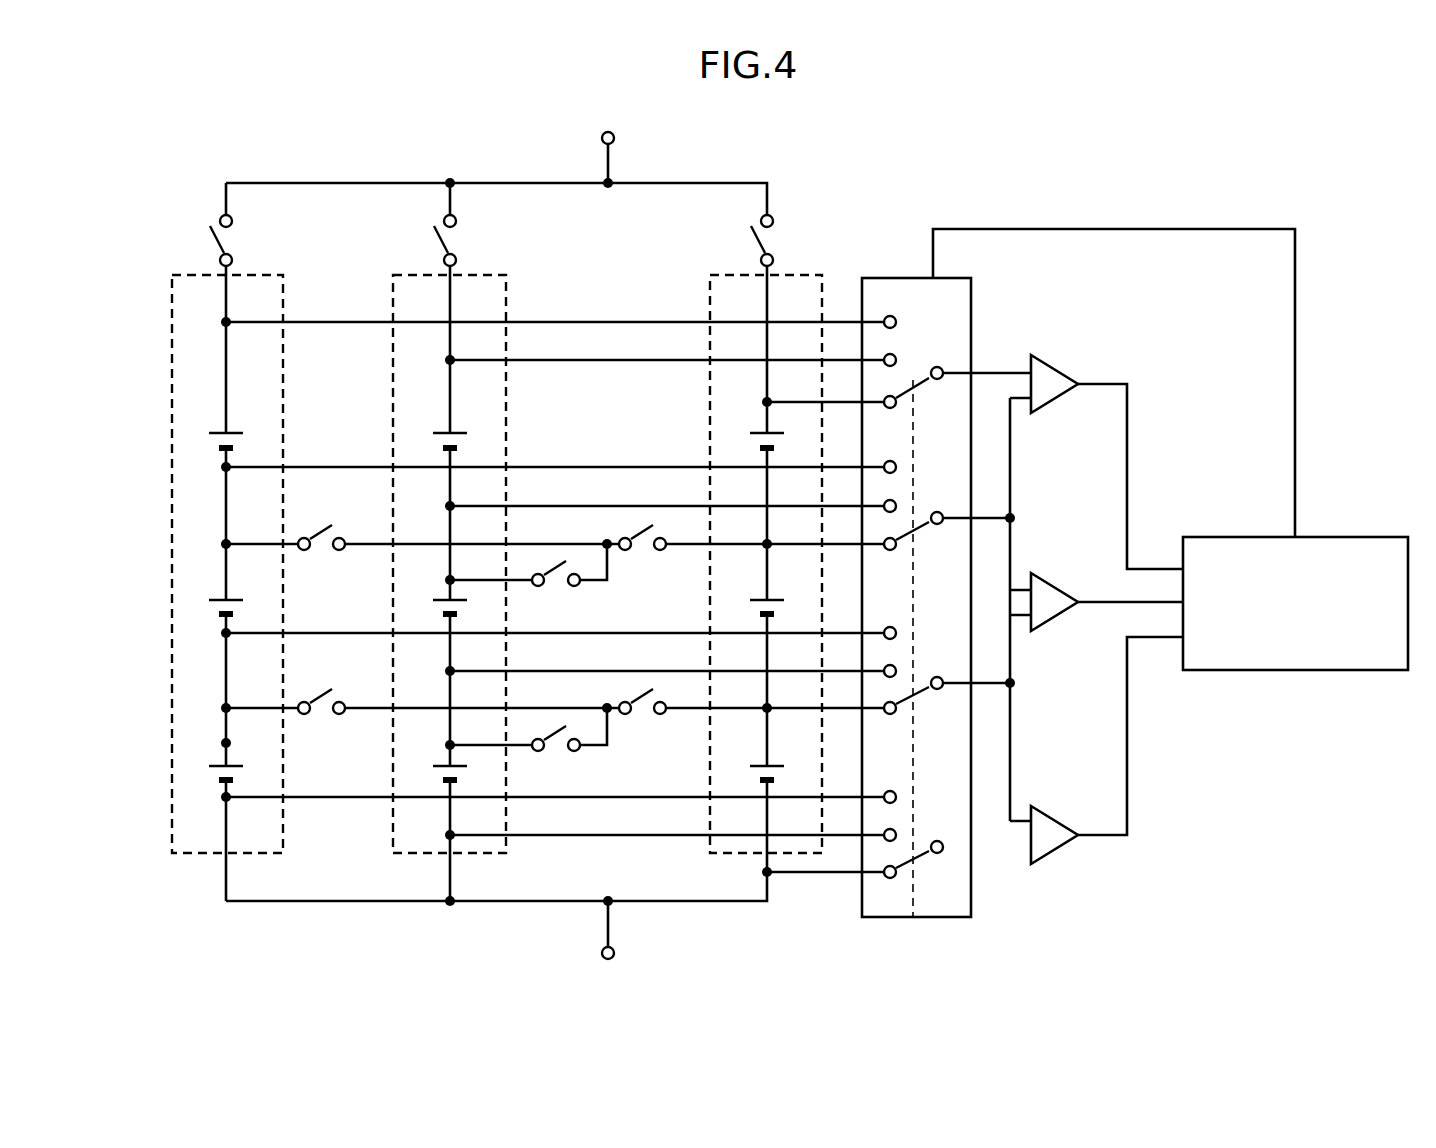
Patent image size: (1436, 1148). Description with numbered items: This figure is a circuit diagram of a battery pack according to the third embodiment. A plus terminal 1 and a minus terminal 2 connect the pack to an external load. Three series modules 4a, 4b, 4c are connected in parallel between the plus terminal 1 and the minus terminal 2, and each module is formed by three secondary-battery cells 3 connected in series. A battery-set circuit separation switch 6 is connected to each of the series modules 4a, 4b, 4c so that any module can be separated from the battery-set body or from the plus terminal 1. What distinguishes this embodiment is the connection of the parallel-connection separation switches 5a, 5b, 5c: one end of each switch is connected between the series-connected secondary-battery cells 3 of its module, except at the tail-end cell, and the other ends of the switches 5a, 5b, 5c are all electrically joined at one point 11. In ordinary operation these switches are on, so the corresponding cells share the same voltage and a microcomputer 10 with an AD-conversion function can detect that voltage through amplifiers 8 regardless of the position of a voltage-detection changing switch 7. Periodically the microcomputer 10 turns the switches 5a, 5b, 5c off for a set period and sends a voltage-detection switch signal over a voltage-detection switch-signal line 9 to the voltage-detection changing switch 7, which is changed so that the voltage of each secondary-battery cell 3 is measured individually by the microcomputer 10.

The plus terminal 1 is at (613, 131).
The minus terminal 2 is at (614, 947).
The secondary-battery cell 3 is at (222, 428).
The series module 4a is at (268, 272).
The series module 4b is at (492, 272).
The series module 4c is at (808, 272).
The parallel-connection separation switch 5a is at (323, 718).
The parallel-connection separation switch 5b is at (556, 753).
The parallel-connection separation switch 5c is at (640, 718).
The battery-set circuit separation switch 6 is at (232, 246).
The voltage-detection changing switch 7 is at (943, 276).
The amplifier 8 is at (1053, 362).
The voltage-detection switch-signal line 9 is at (1078, 229).
The microcomputer 10 is at (1360, 535).
The one point 11 is at (606, 700).